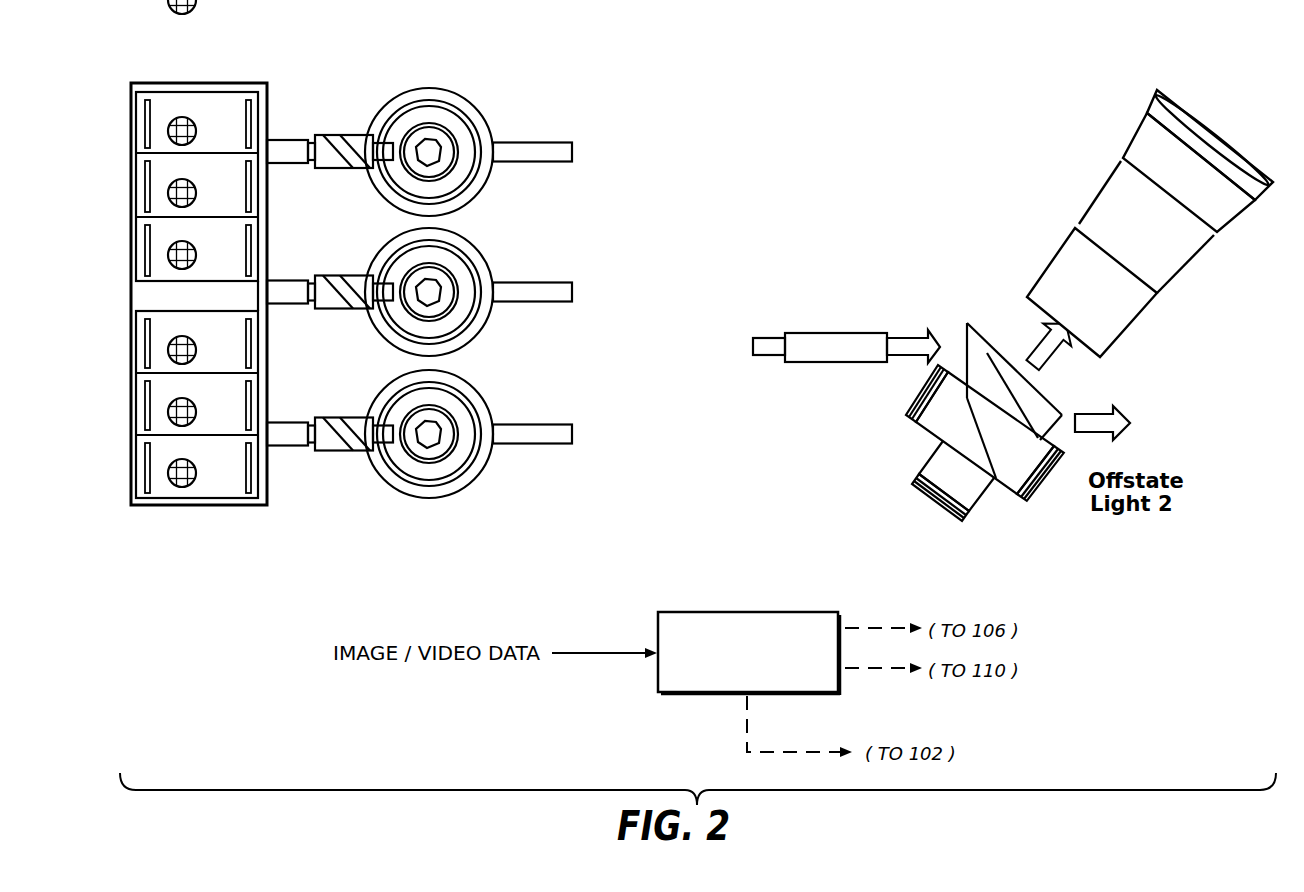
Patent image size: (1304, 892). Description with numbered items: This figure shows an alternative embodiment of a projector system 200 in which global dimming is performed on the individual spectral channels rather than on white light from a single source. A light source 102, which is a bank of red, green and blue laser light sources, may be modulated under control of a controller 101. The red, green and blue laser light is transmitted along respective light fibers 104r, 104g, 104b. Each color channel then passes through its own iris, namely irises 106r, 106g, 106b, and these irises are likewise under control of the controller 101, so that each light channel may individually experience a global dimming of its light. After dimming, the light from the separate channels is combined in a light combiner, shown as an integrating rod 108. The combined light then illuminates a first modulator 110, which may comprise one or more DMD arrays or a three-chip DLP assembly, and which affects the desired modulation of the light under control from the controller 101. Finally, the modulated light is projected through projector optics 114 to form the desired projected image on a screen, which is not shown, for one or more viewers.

The controller 101 is at (788, 612).
The light source 102 is at (267, 78).
The red light fiber 104r is at (326, 134).
The green light fiber 104g is at (326, 275).
The blue light fiber 104b is at (326, 417).
The red channel iris 106r is at (479, 110).
The green channel iris 106g is at (479, 250).
The blue channel iris 106b is at (479, 392).
The integrating rod 108 is at (831, 333).
The first modulator 110 is at (1025, 527).
The projector optics 114 is at (1138, 137).
The projection system 200 is at (772, 114).